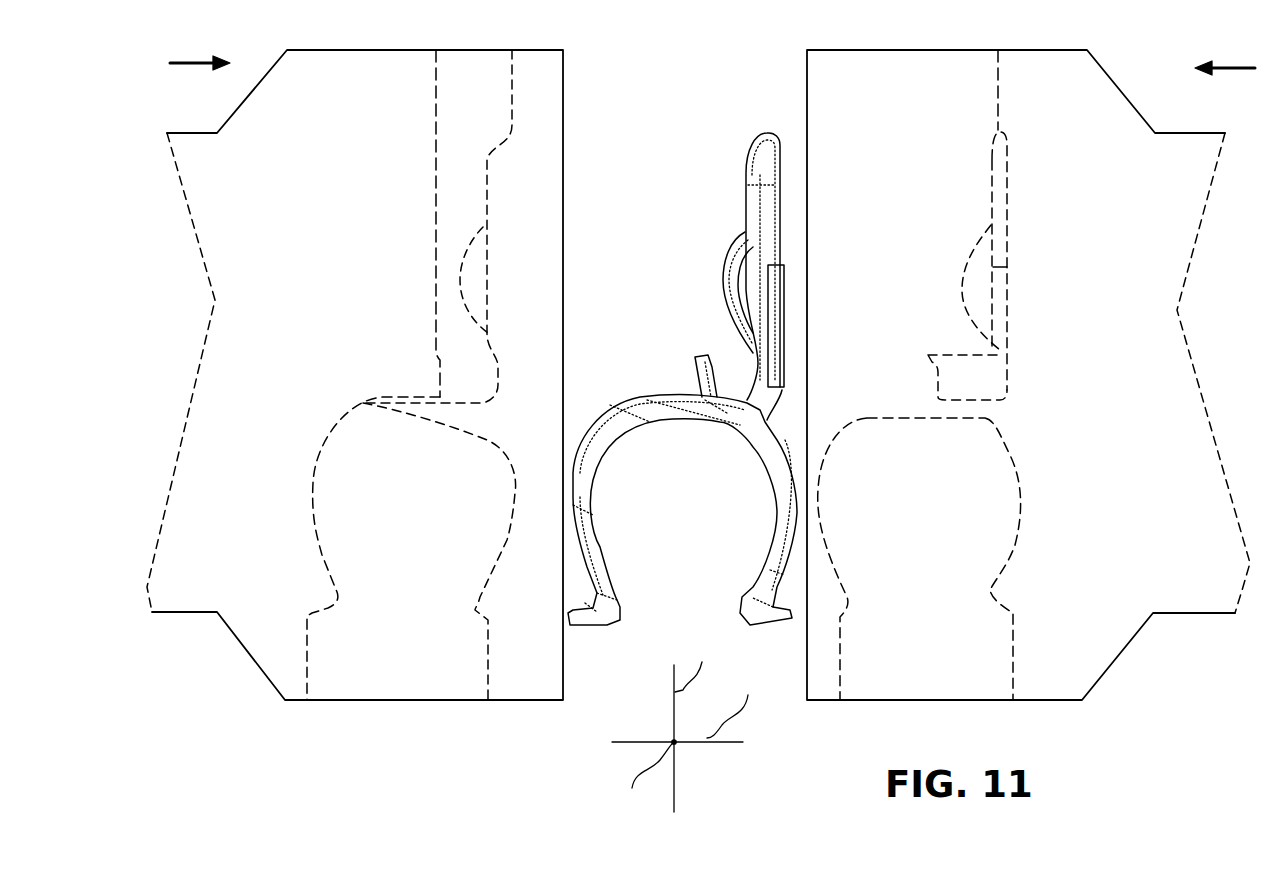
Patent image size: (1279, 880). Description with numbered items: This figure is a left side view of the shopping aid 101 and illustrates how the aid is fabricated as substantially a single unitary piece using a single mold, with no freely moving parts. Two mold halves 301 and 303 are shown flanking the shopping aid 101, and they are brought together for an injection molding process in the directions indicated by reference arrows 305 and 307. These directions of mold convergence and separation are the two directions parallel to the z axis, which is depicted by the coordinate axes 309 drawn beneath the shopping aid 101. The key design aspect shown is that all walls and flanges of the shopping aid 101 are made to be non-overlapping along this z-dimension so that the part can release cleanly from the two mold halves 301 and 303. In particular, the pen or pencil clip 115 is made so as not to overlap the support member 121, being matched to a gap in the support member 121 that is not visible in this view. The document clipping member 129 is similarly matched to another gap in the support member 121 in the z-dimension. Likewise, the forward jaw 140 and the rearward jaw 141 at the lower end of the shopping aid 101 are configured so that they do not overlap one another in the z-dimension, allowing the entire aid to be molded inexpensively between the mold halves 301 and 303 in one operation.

The shopping aid 101 is at (682, 360).
The pen or pencil clip 115 is at (695, 355).
The support member 121 is at (765, 137).
The document clipping member 129 is at (728, 257).
The forward jaw 140 is at (593, 553).
The rearward jaw 141 is at (755, 577).
The mold half 301 is at (333, 58).
The mold half 303 is at (1062, 60).
The reference arrow 305 is at (197, 60).
The reference arrow 307 is at (1235, 62).
The z axis 309 is at (648, 738).